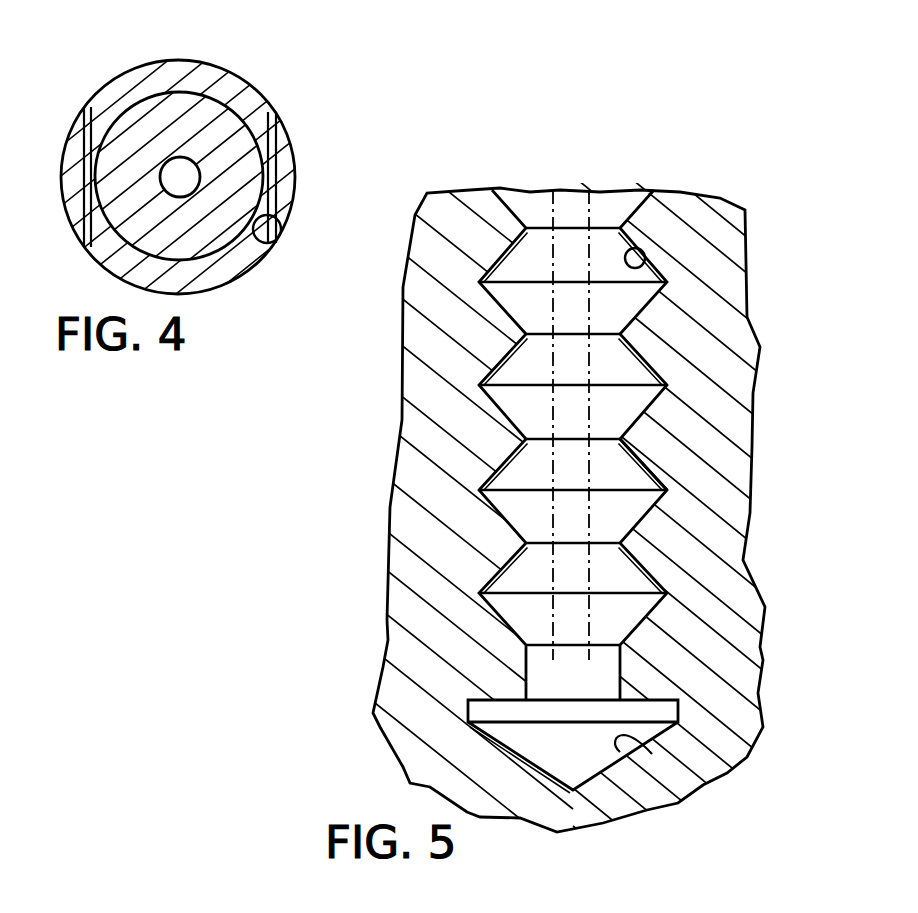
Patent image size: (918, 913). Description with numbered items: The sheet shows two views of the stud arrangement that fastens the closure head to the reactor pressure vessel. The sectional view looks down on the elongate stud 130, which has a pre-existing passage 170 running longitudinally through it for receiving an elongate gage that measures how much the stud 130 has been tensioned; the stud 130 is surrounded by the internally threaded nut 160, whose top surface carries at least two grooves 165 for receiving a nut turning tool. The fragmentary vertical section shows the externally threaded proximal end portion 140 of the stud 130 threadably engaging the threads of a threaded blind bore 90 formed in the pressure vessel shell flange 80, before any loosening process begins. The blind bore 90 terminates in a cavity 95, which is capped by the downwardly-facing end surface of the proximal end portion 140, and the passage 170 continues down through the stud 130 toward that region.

In FIG. 5, the pressure vessel shell flange 80 is at (727, 405).
In FIG. 5, the threaded blind bore 90 is at (658, 268).
In FIG. 5, the cavity 95 is at (620, 752).
In FIG. 4, the elongate stud 130 is at (138, 128).
In FIG. 5, the elongate stud 130 is at (615, 270).
In FIG. 5, the proximal end portion 140 is at (620, 482).
In FIG. 4, the nut 160 is at (165, 62).
In FIG. 4, the groove 165 is at (258, 246).
In FIG. 4, the passage 170 is at (192, 173).
In FIG. 5, the passage 170 is at (585, 258).